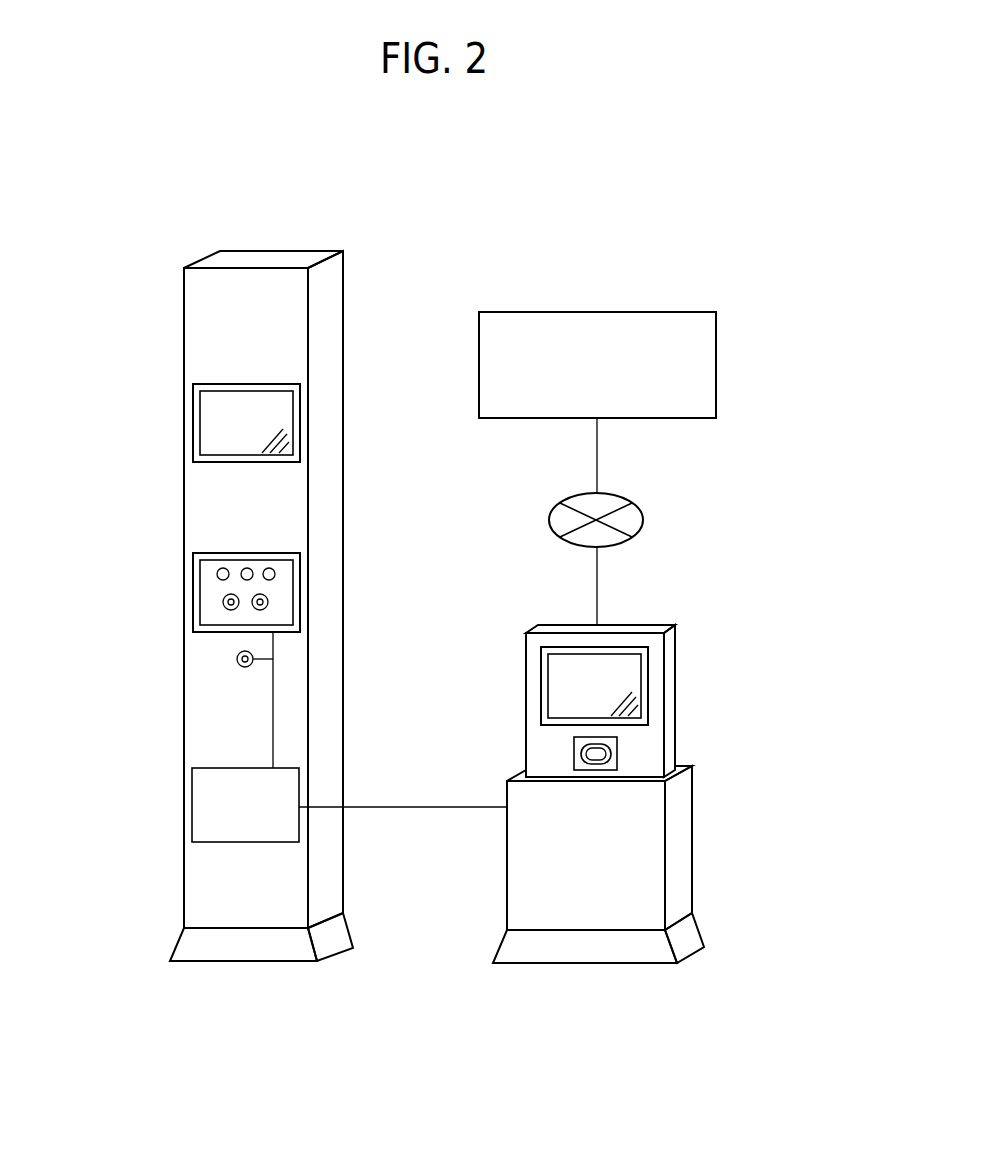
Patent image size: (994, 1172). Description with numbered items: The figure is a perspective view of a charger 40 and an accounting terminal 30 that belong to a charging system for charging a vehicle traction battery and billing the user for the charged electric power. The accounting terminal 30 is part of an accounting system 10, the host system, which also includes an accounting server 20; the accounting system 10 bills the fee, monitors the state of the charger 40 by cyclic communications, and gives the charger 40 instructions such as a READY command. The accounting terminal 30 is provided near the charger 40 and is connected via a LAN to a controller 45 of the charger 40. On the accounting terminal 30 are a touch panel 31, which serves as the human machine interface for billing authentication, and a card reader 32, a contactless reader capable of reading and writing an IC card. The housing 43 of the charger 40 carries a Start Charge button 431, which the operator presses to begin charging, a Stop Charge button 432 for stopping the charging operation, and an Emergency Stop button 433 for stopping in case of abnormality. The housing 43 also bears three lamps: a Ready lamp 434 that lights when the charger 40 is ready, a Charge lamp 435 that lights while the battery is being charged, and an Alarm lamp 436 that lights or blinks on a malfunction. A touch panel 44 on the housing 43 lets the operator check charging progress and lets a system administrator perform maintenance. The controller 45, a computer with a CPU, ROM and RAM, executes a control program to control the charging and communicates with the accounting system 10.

The accounting system 10 is at (700, 523).
The accounting server 20 is at (716, 358).
The accounting terminal 30 is at (712, 818).
The touch panel 31 is at (643, 666).
The card reader 32 is at (618, 745).
The charger 40 is at (176, 303).
The housing 43 is at (328, 343).
The touch panel 44 is at (212, 423).
The controller 45 is at (192, 807).
The Start Charge button 431 is at (223, 606).
The Stop Charge button 432 is at (268, 603).
The Emergency Stop button 433 is at (237, 660).
The Ready lamp 434 is at (220, 568).
The Charge lamp 435 is at (250, 568).
The Alarm lamp 436 is at (276, 573).